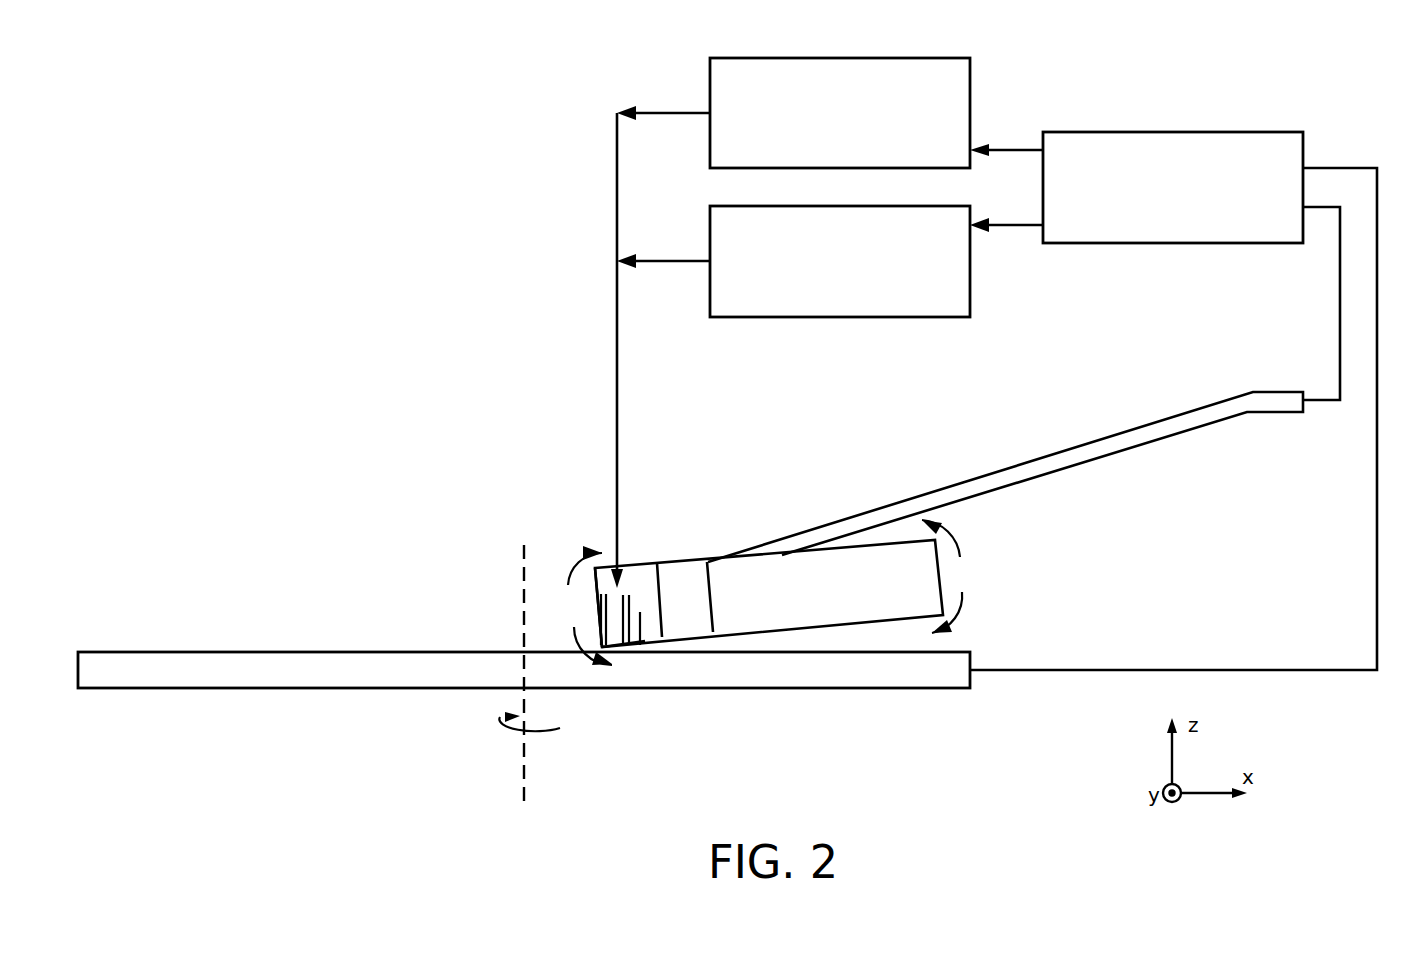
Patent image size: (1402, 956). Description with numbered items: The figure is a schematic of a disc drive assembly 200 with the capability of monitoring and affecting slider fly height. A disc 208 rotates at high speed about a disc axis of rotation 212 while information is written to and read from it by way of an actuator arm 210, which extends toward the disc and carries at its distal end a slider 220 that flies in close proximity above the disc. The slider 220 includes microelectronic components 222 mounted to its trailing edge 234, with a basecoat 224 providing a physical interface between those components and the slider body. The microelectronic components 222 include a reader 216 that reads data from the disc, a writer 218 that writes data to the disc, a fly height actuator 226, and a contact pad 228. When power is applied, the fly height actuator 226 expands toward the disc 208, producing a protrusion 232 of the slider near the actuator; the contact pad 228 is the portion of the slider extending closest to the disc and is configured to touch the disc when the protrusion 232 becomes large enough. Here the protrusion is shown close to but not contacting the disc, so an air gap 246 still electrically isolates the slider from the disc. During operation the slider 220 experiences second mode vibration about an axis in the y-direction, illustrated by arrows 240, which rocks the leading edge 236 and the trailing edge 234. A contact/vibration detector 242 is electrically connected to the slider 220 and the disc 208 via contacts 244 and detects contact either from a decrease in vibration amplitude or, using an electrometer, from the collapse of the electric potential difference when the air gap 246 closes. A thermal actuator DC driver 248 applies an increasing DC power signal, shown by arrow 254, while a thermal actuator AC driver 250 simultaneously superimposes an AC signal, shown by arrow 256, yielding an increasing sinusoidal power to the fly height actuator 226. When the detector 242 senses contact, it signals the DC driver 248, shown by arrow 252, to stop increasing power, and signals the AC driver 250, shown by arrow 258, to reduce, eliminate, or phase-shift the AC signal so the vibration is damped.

The disc drive assembly 200 is at (270, 205).
The disc 208 is at (524, 670).
The actuator arm 210 is at (1150, 423).
The disc axis of rotation 212 is at (523, 607).
The reader 216 is at (640, 648).
The writer 218 is at (620, 645).
The slider 220 is at (769, 593).
The microelectronic components 222 is at (637, 540).
The basecoat 224 is at (685, 599).
The fly height actuator 226 is at (622, 652).
The contact pad 228 is at (593, 608).
The protrusion 232 is at (640, 648).
The trailing edge 234 is at (565, 621).
The leading edge 236 is at (968, 565).
The arrows 240 is at (590, 556).
The contact/vibration detector 242 is at (1173, 187).
The contacts 244 is at (1340, 301).
The air gap 246 is at (662, 653).
The thermal actuator DC driver 248 is at (840, 113).
The thermal actuator AC driver 250 is at (840, 261).
The arrow 252 is at (1012, 148).
The arrow 254 is at (655, 112).
The arrow 256 is at (650, 262).
The arrow 258 is at (1005, 227).